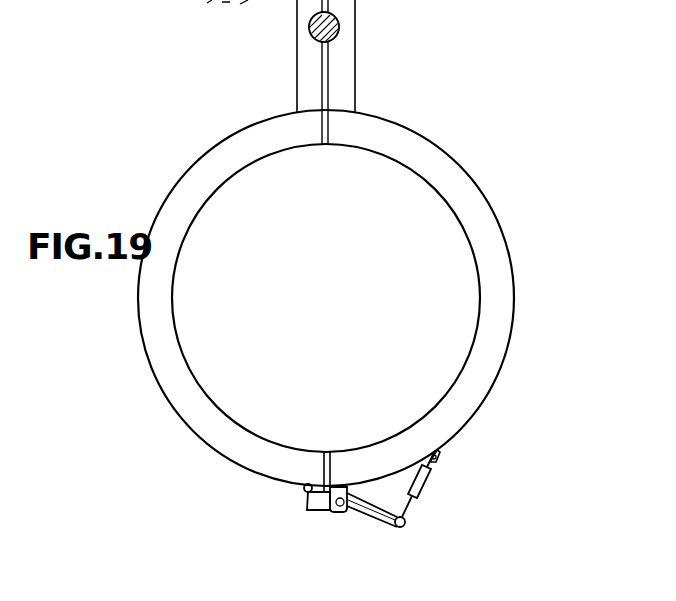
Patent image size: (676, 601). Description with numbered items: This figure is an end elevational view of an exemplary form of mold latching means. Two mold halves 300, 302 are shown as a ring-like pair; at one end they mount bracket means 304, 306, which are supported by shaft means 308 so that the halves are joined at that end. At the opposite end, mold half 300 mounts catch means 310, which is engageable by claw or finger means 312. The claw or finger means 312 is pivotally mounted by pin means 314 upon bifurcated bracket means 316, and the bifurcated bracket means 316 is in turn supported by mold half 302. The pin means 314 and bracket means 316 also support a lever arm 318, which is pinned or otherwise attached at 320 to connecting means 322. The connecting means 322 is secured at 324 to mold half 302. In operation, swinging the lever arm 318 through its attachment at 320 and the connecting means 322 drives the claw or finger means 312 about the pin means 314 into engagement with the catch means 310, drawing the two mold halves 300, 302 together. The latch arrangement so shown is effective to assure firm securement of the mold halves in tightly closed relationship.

The mold half 300 is at (171, 392).
The mold half 302 is at (493, 364).
The bracket means 304 is at (310, 72).
The bracket means 306 is at (347, 80).
The shaft means 308 is at (338, 24).
The catch means 310 is at (304, 489).
The claw or finger means 312 is at (308, 502).
The pin means 314 is at (334, 512).
The bifurcated bracket means 316 is at (339, 512).
The lever arm 318 is at (366, 506).
The pin attachment point 320 is at (406, 520).
The connecting means 322 is at (428, 482).
The securement point 324 is at (437, 458).